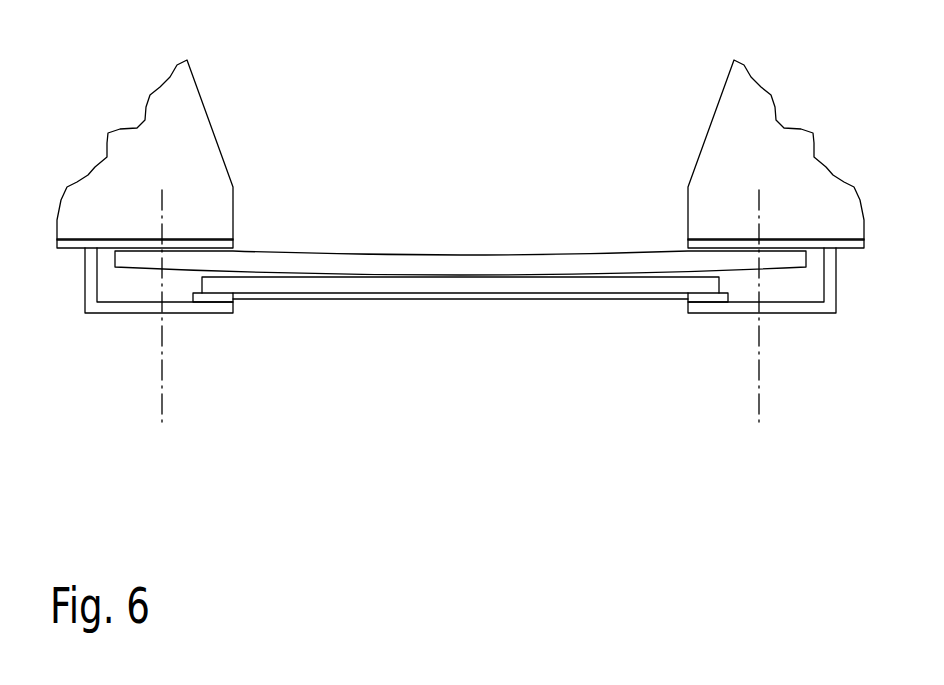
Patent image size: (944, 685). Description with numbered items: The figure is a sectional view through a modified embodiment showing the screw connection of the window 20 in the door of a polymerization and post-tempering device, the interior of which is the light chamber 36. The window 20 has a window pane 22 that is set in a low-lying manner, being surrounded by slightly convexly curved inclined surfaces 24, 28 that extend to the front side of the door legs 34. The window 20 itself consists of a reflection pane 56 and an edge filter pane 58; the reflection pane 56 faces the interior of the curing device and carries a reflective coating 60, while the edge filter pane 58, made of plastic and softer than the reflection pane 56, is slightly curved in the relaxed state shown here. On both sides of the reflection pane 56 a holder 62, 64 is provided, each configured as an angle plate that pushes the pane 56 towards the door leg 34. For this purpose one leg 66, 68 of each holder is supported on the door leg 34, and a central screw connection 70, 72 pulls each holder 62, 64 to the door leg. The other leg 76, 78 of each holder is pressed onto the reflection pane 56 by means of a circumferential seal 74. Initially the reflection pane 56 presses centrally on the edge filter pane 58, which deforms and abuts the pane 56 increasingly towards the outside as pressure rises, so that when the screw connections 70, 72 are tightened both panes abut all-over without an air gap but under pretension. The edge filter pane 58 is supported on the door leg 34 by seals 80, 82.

The window 20 is at (398, 433).
The window pane 22 is at (329, 85).
The inclined surface 24 is at (709, 84).
The inclined surface 28 is at (212, 87).
The door leg 34 is at (160, 107).
The light chamber 36 is at (496, 429).
The reflection pane 56 is at (393, 285).
The edge filter pane 58 is at (332, 262).
The reflective coating 60 is at (305, 300).
The holder 62 is at (113, 315).
The holder 64 is at (802, 315).
The leg 66 is at (85, 283).
The leg 68 is at (837, 283).
The screw connection 70 is at (164, 405).
The screw connection 72 is at (762, 407).
The circumferential seal 74 is at (705, 300).
The leg 76 is at (212, 308).
The leg 78 is at (738, 305).
The seal 80 is at (107, 245).
The seal 82 is at (813, 240).